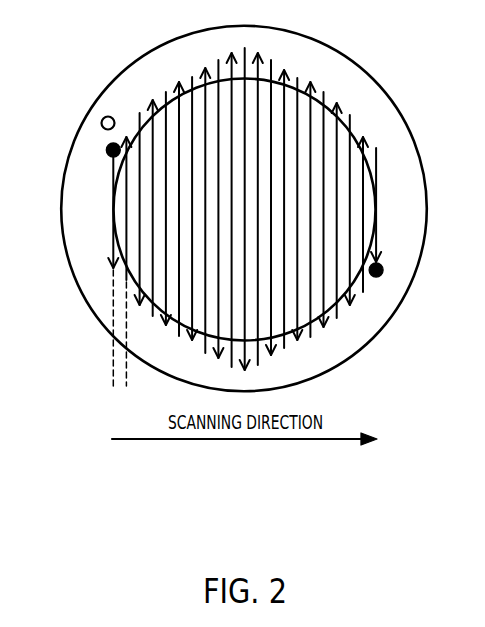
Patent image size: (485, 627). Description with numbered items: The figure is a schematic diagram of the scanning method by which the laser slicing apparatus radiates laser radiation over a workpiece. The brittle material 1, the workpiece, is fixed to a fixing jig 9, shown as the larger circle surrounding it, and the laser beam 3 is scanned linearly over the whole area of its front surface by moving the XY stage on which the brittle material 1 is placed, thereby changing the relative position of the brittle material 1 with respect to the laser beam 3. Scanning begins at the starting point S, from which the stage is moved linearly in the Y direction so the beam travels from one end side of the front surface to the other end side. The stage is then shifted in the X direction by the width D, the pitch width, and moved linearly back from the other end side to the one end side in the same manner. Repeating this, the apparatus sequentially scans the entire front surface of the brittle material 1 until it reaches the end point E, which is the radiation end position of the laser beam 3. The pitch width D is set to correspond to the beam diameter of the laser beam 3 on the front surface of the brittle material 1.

The fixing jig 9 is at (360, 88).
The brittle material 1 is at (353, 290).
The laser beam 3 is at (101, 123).
The starting point S is at (106, 150).
The end point E is at (383, 269).
The width (pitch width) D is at (88, 378).